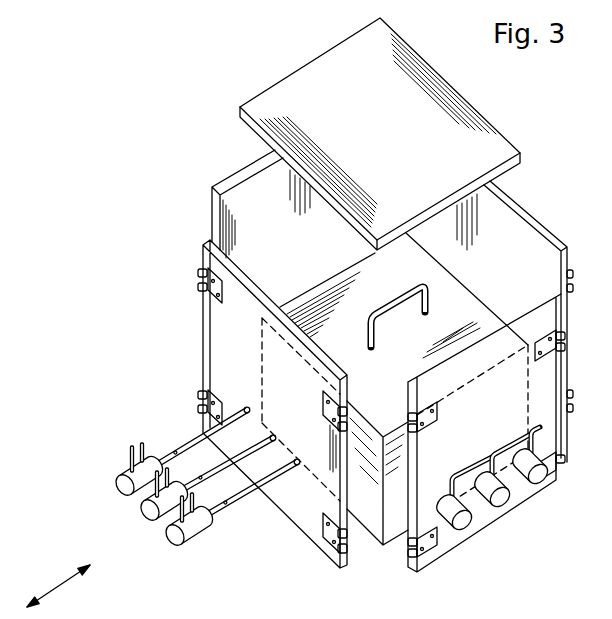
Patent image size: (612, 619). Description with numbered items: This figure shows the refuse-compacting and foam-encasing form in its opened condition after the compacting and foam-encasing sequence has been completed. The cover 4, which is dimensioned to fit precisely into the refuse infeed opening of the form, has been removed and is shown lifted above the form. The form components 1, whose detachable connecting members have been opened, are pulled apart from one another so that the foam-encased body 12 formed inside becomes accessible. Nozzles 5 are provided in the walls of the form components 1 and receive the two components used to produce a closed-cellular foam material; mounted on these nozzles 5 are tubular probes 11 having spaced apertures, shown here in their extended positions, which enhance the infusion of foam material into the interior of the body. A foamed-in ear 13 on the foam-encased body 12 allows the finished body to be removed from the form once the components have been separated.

The form component 1 is at (242, 190).
The cover 4 is at (312, 80).
The nozzle 5 is at (125, 488).
The tubular probe 11 is at (200, 435).
The foam-encased body 12 is at (350, 292).
The foamed-in ear 13 is at (430, 297).